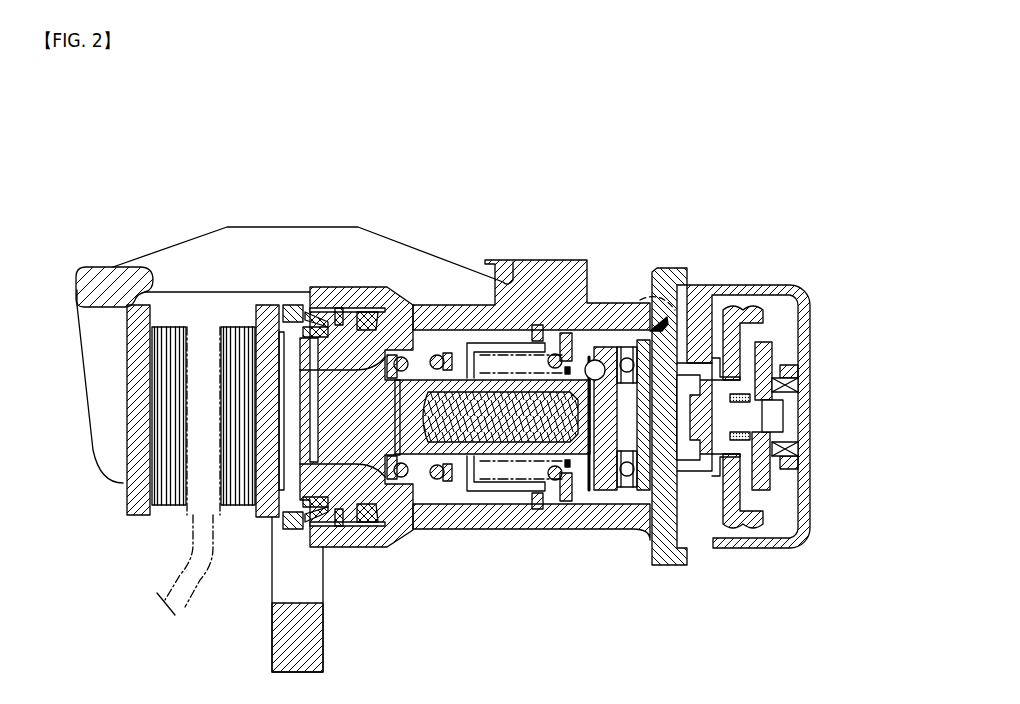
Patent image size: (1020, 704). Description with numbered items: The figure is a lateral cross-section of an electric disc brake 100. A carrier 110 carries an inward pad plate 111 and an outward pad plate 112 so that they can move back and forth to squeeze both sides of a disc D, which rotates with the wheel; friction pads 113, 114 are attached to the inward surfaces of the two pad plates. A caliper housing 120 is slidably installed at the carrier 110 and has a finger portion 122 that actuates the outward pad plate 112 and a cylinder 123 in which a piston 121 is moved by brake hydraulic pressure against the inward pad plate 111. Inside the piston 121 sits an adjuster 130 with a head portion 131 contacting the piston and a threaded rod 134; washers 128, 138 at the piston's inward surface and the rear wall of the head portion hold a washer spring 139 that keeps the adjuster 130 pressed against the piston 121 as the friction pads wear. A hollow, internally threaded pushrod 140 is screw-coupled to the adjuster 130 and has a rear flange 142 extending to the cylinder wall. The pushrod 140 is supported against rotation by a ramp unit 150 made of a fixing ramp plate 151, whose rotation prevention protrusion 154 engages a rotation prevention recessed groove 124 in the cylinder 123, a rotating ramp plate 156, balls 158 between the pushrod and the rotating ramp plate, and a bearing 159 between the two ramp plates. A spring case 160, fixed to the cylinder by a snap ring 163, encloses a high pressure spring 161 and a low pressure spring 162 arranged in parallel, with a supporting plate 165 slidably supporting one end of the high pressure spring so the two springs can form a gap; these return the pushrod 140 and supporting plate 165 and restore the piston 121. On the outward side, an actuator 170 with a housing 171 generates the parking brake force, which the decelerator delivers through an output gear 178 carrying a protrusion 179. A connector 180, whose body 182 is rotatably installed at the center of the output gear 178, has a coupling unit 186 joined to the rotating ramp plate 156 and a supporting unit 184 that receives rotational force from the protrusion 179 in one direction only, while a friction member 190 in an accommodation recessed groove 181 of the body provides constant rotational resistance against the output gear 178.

The electric disc brake 100 is at (441, 180).
The carrier 110 is at (287, 620).
The inward pad plate 111 is at (270, 518).
The outward pad plate 112 is at (146, 518).
The friction pad 113 is at (238, 508).
The friction pad 114 is at (172, 505).
The caliper housing 120 is at (276, 219).
The piston 121 is at (330, 497).
The finger portion 122 is at (93, 418).
The cylinder 123 is at (470, 318).
The rotation prevention recessed groove 124 is at (695, 520).
The washer 128 is at (448, 352).
The adjuster 130 is at (445, 598).
The head portion 131 is at (375, 482).
The rod 134 is at (437, 480).
The washer 138 is at (398, 322).
The washer spring 139 is at (428, 352).
The pushrod 140 is at (493, 455).
The flange 142 is at (592, 357).
The ramp unit 150 is at (662, 330).
The fixing ramp plate 151 is at (612, 530).
The rotation prevention protrusion 154 is at (645, 492).
The rotating ramp plate 156 is at (613, 490).
The balls 158 is at (600, 360).
The bearing 159 is at (661, 318).
The spring case 160 is at (500, 345).
The high pressure spring 161 is at (568, 333).
The low pressure spring 162 is at (558, 500).
The snap ring 163 is at (536, 326).
The supporting plate 165 is at (527, 455).
The actuator 170 is at (782, 273).
The housing 171 is at (742, 288).
The output gear 178 is at (748, 333).
The protrusion 179 is at (762, 478).
The connector 180 is at (783, 595).
The accommodation recessed groove 181 is at (770, 438).
The body 182 is at (740, 530).
The supporting unit 184 is at (765, 515).
The coupling unit 186 is at (712, 520).
The friction member 190 is at (783, 398).
The disc D is at (165, 604).